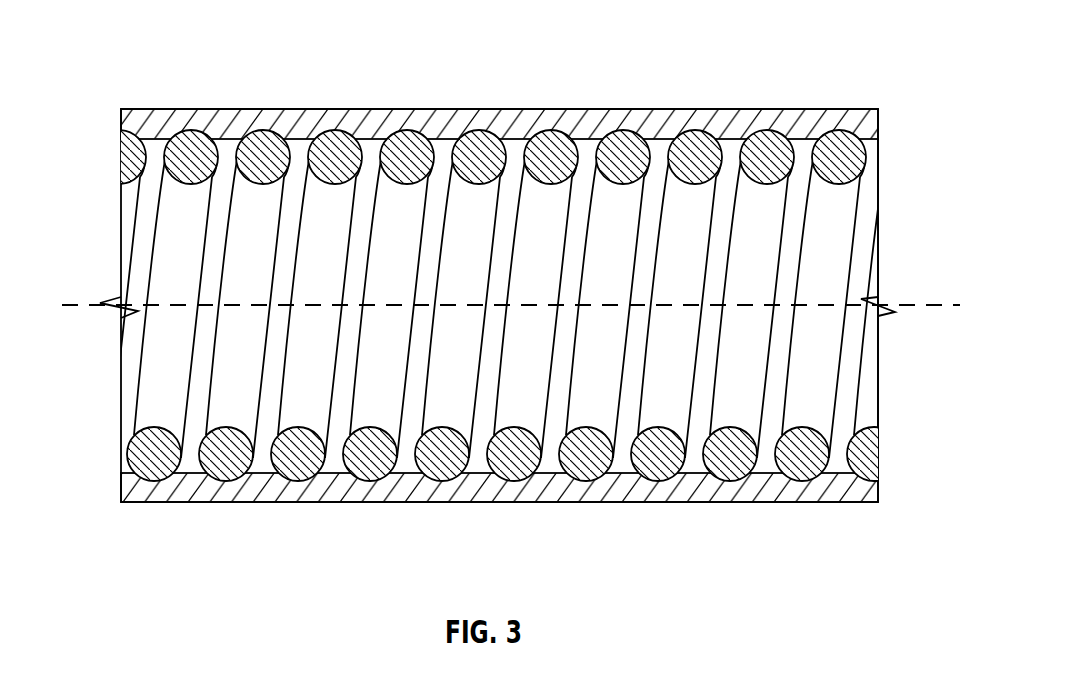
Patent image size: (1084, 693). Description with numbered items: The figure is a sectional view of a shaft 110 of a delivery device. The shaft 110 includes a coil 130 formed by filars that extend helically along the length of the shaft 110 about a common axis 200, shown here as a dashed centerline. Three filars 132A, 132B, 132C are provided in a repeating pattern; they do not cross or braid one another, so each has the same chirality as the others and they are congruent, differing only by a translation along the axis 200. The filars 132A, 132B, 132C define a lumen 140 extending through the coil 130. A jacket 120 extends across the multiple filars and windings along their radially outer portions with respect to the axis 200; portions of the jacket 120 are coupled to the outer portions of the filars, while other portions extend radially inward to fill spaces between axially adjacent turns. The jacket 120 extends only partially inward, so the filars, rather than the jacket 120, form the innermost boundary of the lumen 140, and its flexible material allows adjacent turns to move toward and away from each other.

The shaft 110 is at (126, 70).
The jacket 120 is at (288, 122).
The coil 130 is at (800, 410).
The filar 132A is at (398, 147).
The filar 132B is at (472, 145).
The filar 132C is at (550, 145).
The lumen 140 is at (863, 233).
The axis 200 is at (95, 303).